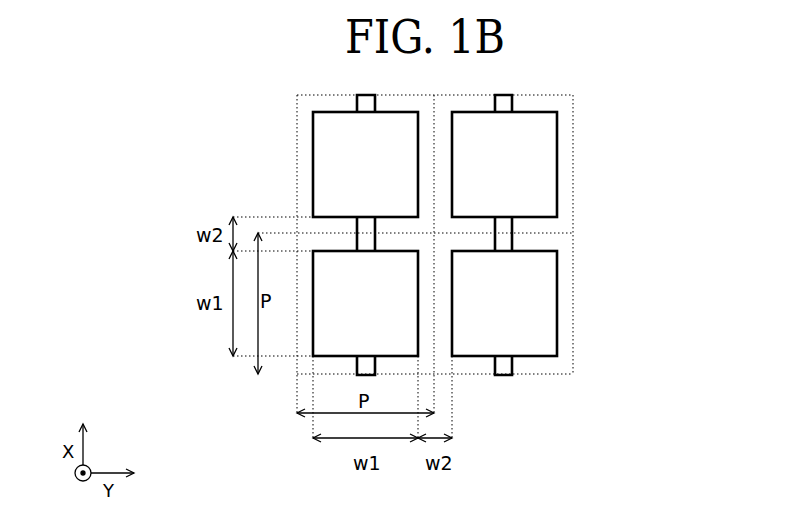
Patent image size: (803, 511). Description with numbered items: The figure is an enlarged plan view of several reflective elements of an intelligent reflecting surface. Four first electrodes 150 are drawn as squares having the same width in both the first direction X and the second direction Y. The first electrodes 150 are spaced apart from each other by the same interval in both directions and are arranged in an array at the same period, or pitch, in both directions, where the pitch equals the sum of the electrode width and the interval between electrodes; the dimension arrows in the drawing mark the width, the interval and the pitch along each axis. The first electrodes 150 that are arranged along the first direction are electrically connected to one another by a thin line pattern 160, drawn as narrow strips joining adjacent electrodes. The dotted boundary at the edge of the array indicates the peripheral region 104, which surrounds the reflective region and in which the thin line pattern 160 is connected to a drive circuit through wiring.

The peripheral region 104 is at (570, 109).
The first electrode 150 is at (508, 292).
The thin line pattern 160 is at (508, 233).